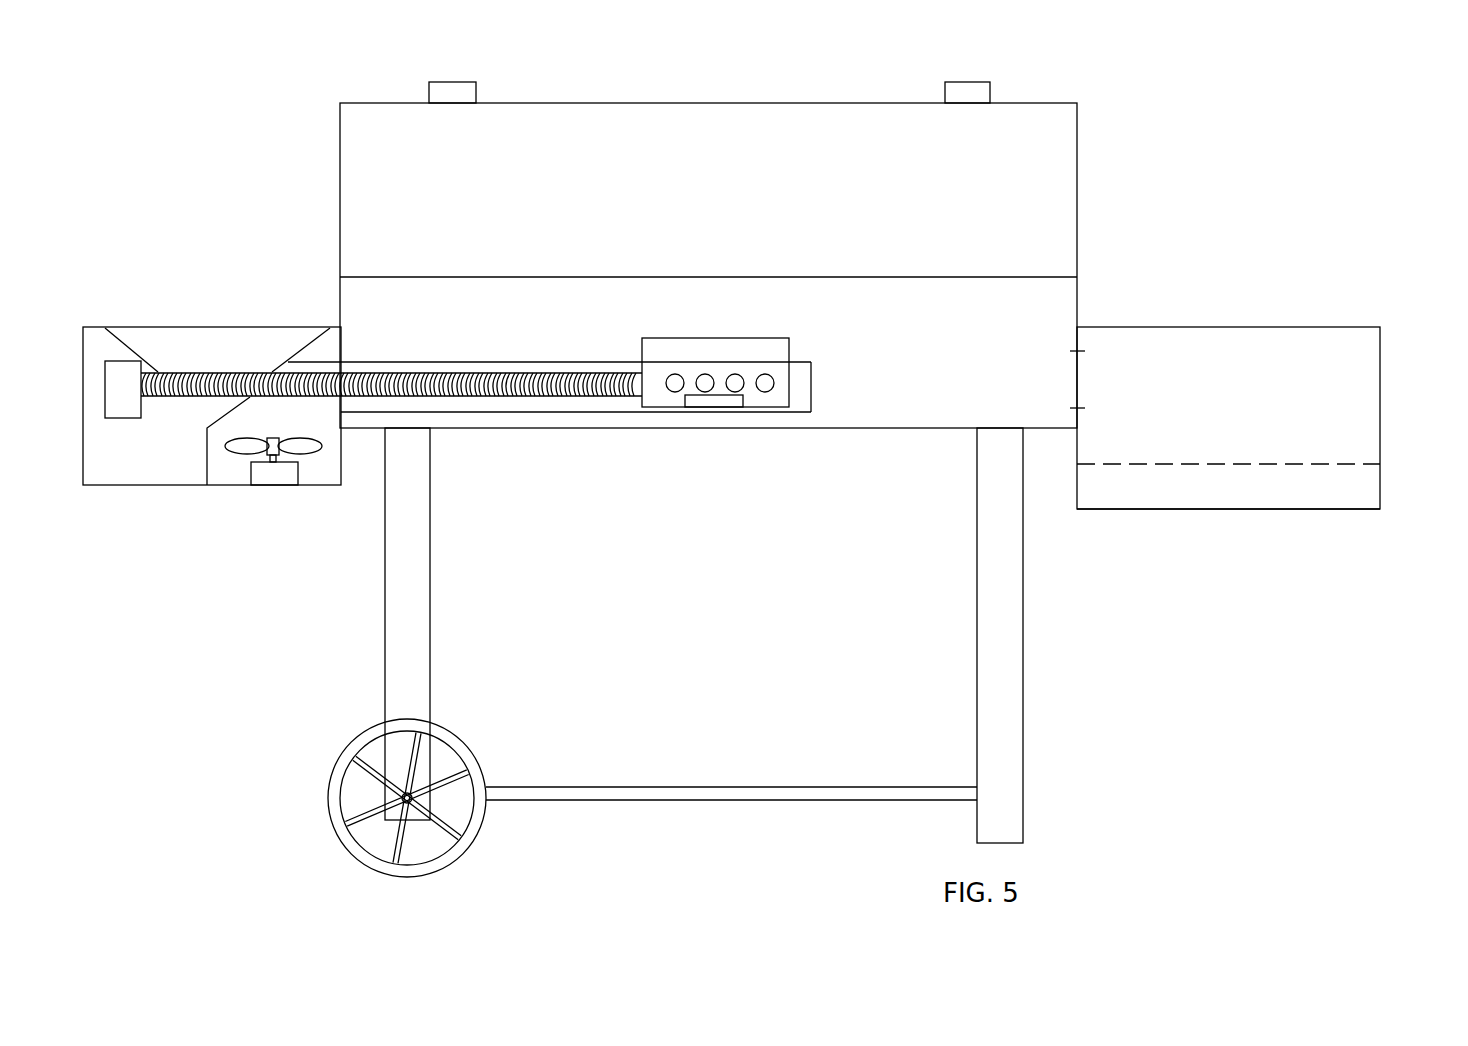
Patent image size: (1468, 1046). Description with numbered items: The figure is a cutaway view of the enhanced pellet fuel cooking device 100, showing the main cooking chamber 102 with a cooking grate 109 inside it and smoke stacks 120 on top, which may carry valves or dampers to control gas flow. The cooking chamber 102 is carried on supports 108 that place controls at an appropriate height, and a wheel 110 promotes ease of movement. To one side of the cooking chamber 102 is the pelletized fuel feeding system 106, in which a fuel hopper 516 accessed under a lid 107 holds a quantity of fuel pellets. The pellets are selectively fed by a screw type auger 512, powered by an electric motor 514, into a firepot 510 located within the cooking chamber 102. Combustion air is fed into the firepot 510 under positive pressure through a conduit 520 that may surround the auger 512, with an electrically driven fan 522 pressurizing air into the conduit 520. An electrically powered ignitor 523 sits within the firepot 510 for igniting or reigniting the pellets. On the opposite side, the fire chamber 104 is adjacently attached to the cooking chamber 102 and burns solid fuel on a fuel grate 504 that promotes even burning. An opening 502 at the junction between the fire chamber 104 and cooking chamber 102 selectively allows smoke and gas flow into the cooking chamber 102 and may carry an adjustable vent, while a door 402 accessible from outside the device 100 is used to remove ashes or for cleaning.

The cooking device 100 is at (1284, 79).
The cooking chamber 102 is at (710, 101).
The fire chamber 104 is at (1229, 324).
The pelletized fuel feeding system 106 is at (171, 485).
The lid 107 is at (172, 327).
The supports 108 is at (1023, 640).
The cooking grate 109 is at (708, 277).
The wheel 110 is at (362, 734).
The smoke stacks 120 is at (452, 82).
The door 402 is at (1375, 493).
The opening 502 is at (1084, 383).
The fuel grate 504 is at (1243, 463).
The firepot 510 is at (791, 351).
The auger 512 is at (488, 371).
The electric motor 514 is at (125, 417).
The fuel hopper 516 is at (232, 352).
The conduit 520 is at (408, 362).
The fan 522 is at (271, 485).
The ignitor 523 is at (715, 402).